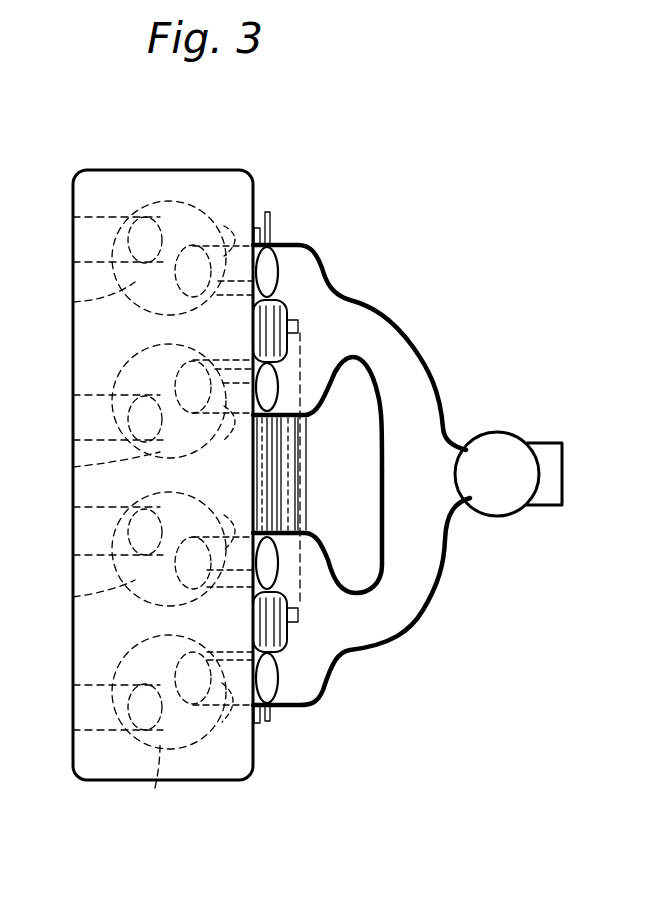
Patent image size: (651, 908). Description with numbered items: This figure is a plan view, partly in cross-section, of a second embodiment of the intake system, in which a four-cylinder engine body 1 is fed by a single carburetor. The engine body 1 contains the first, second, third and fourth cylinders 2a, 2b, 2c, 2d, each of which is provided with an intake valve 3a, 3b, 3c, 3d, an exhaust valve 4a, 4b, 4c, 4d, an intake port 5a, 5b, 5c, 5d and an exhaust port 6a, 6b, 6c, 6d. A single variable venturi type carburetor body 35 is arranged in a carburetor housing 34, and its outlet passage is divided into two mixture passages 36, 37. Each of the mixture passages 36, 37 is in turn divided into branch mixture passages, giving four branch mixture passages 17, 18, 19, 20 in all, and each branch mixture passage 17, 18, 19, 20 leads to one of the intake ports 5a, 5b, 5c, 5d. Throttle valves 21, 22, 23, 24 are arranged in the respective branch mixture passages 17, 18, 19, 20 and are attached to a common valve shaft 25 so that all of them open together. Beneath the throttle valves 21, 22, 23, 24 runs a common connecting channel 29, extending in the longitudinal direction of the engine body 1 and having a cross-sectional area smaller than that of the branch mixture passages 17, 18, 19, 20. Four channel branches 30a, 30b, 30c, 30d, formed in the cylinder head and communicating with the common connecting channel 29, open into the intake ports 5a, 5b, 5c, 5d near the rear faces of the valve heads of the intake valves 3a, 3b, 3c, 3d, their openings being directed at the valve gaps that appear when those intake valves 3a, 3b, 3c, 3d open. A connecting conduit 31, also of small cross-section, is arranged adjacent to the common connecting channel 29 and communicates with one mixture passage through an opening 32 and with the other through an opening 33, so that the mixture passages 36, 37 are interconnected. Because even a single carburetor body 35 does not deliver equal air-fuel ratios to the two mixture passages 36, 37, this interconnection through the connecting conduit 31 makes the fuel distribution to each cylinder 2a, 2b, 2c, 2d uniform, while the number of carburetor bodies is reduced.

The engine body 1 is at (182, 454).
The No. 1 cylinder 2a is at (73, 302).
The No. 2 cylinder 2b is at (73, 467).
The No. 3 cylinder 2c is at (73, 597).
The No. 4 cylinder 2d is at (169, 725).
The intake valve 3a is at (196, 247).
The intake valve 3b is at (190, 372).
The intake valve 3c is at (195, 540).
The intake valve 3d is at (190, 662).
The exhaust valve 4a is at (143, 230).
The exhaust valve 4b is at (138, 400).
The exhaust valve 4c is at (142, 520).
The exhaust valve 4d is at (138, 688).
The intake port 5a is at (231, 250).
The intake port 5b is at (232, 416).
The intake port 5c is at (231, 535).
The intake port 5d is at (236, 705).
The exhaust port 6a is at (96, 216).
The exhaust port 6b is at (96, 394).
The exhaust port 6c is at (97, 508).
The exhaust port 6d is at (99, 685).
The branch mixture passage 17 is at (306, 243).
The branch mixture passage 18 is at (307, 413).
The branch mixture passage 19 is at (268, 560).
The branch mixture passage 20 is at (303, 705).
The throttle valve 21 is at (268, 265).
The throttle valve 22 is at (275, 425).
The throttle valve 23 is at (310, 532).
The throttle valve 24 is at (272, 712).
The common valve shaft 25 is at (267, 723).
The common connecting channel 29 is at (273, 490).
The channel branch 30a is at (226, 285).
The channel branch 30b is at (216, 368).
The channel branch 30c is at (215, 590).
The channel branch 30d is at (220, 661).
The connecting conduit 31 is at (290, 470).
The opening 32 is at (298, 323).
The opening 33 is at (334, 670).
The carburetor housing 34 is at (359, 347).
The variable venturi type carburetor body 35 is at (508, 452).
The mixture passage 36 is at (410, 369).
The mixture passage 37 is at (414, 598).